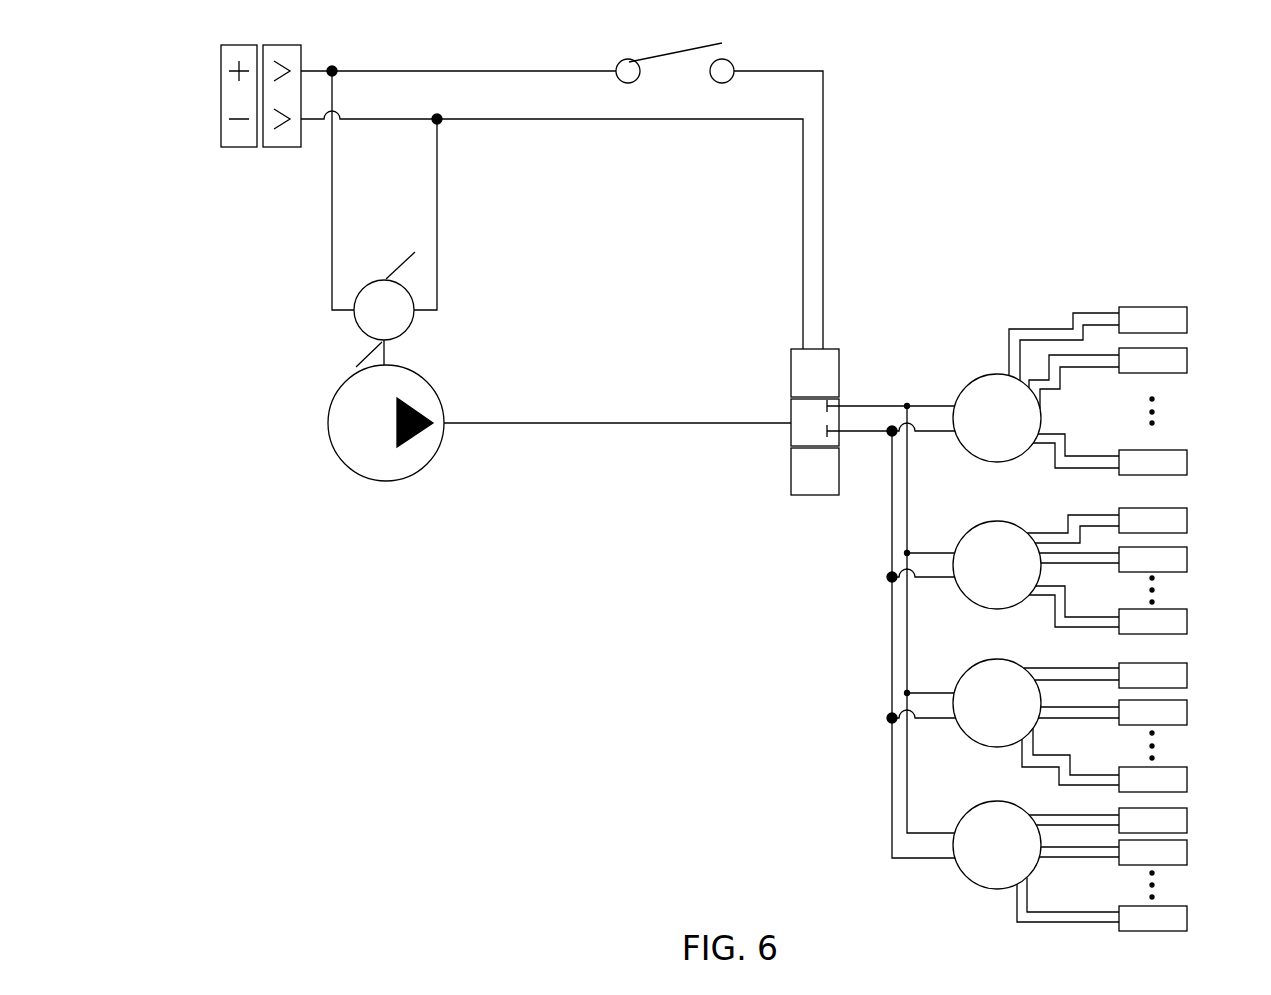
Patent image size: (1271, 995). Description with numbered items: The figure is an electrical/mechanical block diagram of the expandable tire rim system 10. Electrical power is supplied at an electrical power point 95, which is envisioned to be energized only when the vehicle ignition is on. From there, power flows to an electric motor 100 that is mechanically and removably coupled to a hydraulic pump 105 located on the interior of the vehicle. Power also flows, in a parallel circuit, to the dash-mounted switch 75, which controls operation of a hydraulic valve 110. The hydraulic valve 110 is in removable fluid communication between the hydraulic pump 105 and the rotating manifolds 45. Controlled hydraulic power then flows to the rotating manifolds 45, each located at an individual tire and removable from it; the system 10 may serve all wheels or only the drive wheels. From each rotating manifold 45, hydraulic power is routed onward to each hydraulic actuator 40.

The system 10 is at (404, 783).
The hydraulic actuator 40 is at (1160, 320).
The rotating manifold 45 is at (987, 402).
The dash-mounted switch 75 is at (677, 72).
The electrical power point 95 is at (258, 152).
The electric motor 100 is at (367, 308).
The hydraulic pump 105 is at (357, 436).
The hydraulic valve 110 is at (822, 371).